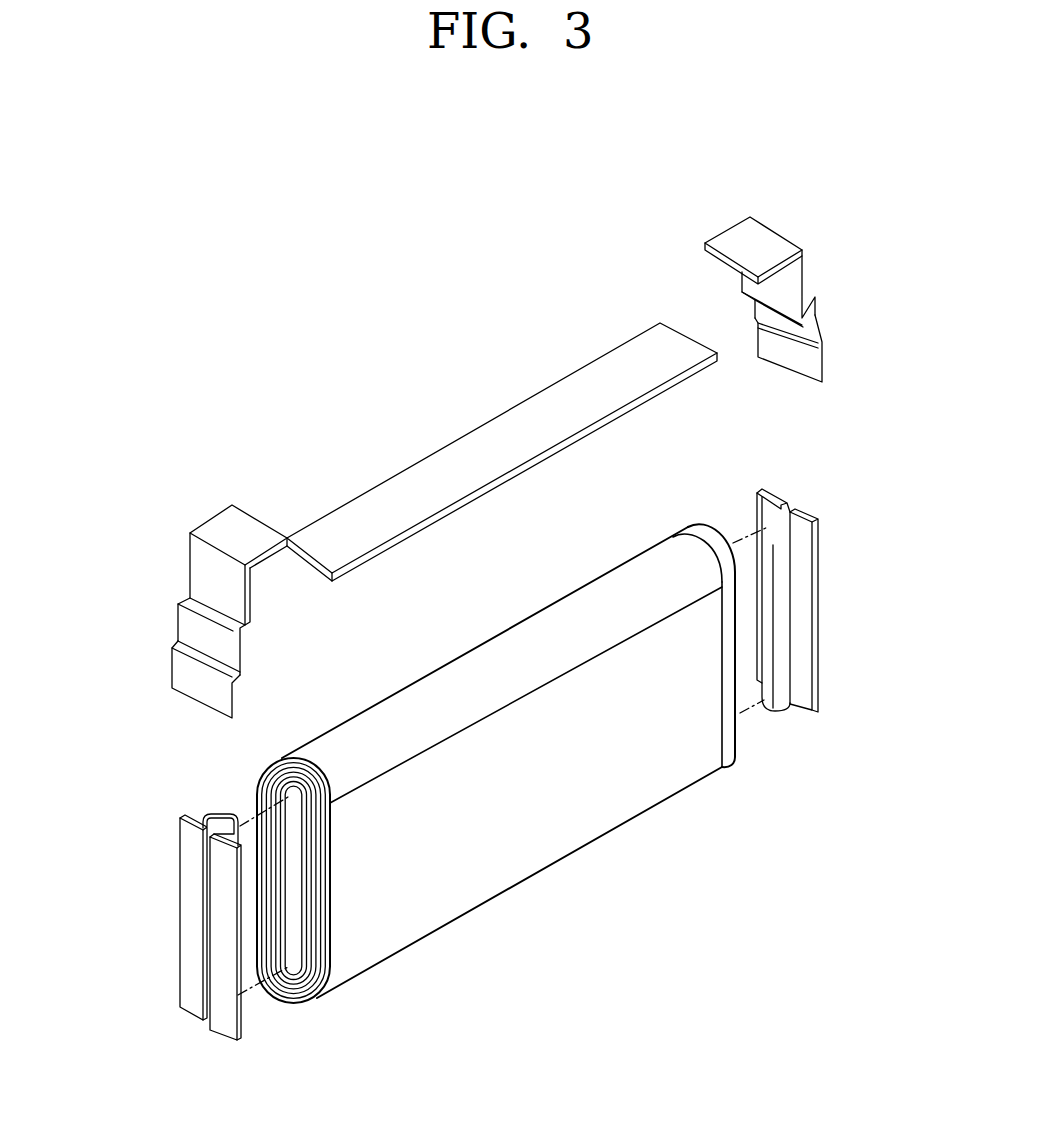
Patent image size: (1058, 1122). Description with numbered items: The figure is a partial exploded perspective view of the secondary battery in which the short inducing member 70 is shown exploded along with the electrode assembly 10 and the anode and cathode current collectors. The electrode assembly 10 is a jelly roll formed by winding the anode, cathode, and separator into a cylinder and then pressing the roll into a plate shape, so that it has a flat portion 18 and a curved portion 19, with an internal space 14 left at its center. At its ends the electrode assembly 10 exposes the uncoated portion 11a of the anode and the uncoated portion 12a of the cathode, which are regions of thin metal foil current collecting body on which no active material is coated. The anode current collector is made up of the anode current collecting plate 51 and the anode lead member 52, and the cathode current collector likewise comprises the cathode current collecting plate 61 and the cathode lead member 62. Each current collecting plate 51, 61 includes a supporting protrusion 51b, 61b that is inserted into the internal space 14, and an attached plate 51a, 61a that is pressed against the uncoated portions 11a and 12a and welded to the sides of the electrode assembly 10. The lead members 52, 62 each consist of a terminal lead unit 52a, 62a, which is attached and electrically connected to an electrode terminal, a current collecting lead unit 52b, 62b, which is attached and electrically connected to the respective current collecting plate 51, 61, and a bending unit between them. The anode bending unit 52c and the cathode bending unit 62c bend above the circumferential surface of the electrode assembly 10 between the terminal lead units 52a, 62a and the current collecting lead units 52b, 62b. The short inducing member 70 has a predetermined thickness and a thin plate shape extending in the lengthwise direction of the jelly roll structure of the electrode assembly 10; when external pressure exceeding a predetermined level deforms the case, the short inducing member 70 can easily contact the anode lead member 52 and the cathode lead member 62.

The electrode assembly 10 is at (588, 863).
The uncoated portion 11a is at (322, 970).
The uncoated portion 12a is at (728, 740).
The internal space 14 is at (287, 958).
The flat portion 18 is at (493, 850).
The curved portion 19 is at (415, 943).
The anode current collecting plate 51 is at (171, 895).
The attached plate 51a is at (186, 953).
The supporting protrusion 51b is at (230, 822).
The anode lead member 52 is at (193, 584).
The terminal lead unit 52a is at (221, 528).
The current collecting lead unit 52b is at (187, 626).
The anode bending unit 52c is at (193, 603).
The cathode current collecting plate 61 is at (808, 581).
The attached plate 61a is at (803, 668).
The supporting protrusion 61b is at (766, 527).
The cathode lead member 62 is at (768, 272).
The terminal lead unit 62a is at (740, 238).
The current collecting lead unit 62b is at (813, 322).
The cathode bending unit 62c is at (808, 297).
The short inducing member 70 is at (437, 466).